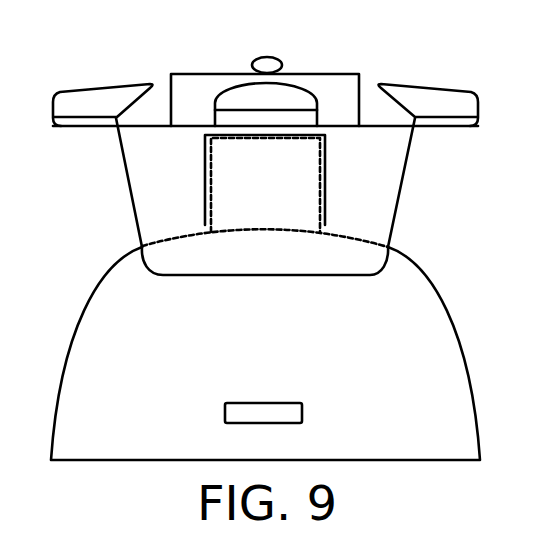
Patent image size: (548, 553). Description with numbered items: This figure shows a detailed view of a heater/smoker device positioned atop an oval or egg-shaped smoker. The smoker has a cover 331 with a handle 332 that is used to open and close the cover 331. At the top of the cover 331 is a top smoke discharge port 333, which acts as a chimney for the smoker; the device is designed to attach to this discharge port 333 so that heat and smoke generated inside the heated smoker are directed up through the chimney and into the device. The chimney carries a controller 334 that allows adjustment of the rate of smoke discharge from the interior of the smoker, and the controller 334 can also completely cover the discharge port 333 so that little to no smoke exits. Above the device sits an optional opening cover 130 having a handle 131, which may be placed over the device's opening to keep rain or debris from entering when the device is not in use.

The opening cover 130 is at (188, 73).
The handle 131 is at (267, 57).
The cover 331 is at (65, 373).
The handle 332 is at (266, 402).
The top smoke discharge port 333 is at (284, 142).
The controller 334 is at (204, 171).